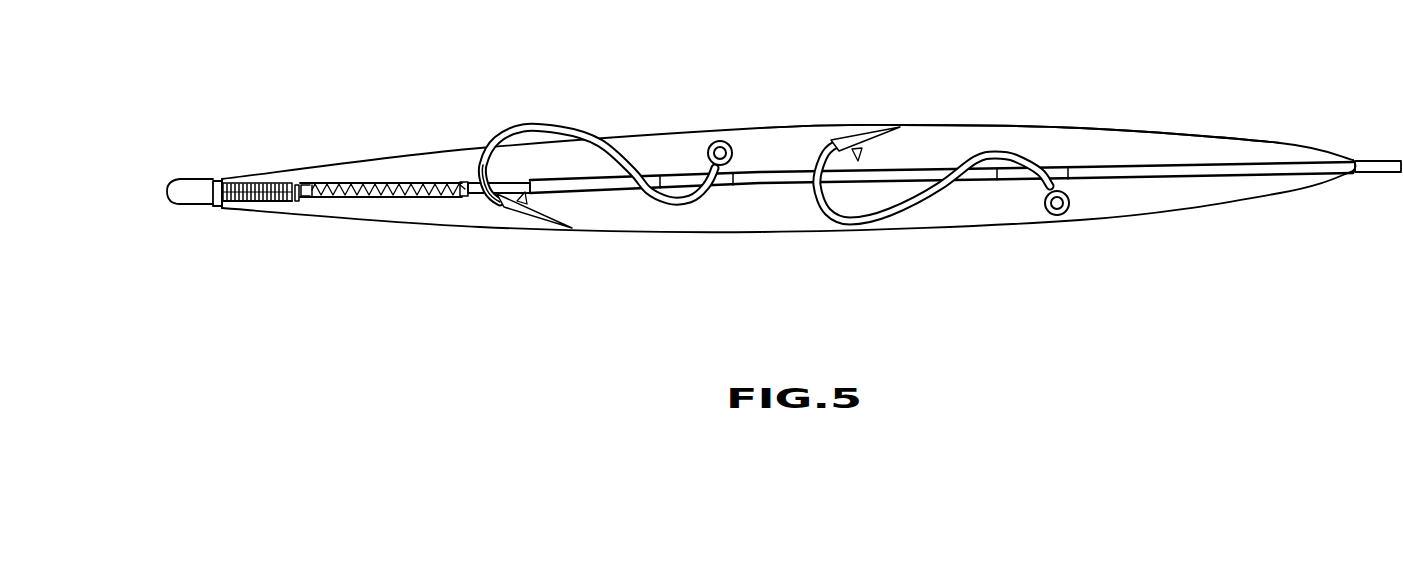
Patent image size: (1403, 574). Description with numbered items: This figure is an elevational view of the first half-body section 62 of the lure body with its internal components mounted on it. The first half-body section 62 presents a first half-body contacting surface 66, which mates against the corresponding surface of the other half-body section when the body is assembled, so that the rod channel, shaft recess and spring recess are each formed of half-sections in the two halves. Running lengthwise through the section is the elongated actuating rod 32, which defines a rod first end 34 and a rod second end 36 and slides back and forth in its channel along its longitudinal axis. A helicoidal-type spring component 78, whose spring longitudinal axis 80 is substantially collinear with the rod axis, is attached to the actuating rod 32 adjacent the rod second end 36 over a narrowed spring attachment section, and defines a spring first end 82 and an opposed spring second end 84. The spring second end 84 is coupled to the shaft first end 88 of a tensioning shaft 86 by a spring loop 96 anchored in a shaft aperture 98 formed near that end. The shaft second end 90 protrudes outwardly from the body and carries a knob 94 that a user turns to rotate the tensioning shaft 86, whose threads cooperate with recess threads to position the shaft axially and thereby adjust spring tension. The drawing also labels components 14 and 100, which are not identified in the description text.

The fish hook 14 is at (550, 127).
The actuating rod 32 is at (1148, 172).
The rod first end 34 is at (1379, 178).
The rod second end 36 is at (508, 177).
The first half-body section 62 is at (1064, 125).
The first half-body contacting surface 66 is at (1117, 138).
The spring component 78 is at (410, 198).
The spring longitudinal axis 80 is at (352, 184).
The spring first end 82 is at (467, 200).
The spring second end 84 is at (315, 198).
The tensioning shaft 86 is at (257, 182).
The shaft first end 88 is at (285, 202).
The shaft second end 90 is at (220, 208).
The knob 94 is at (185, 187).
The spring loop 96 is at (303, 188).
The shaft aperture 98 is at (292, 204).
The hook bend 100 is at (495, 205).